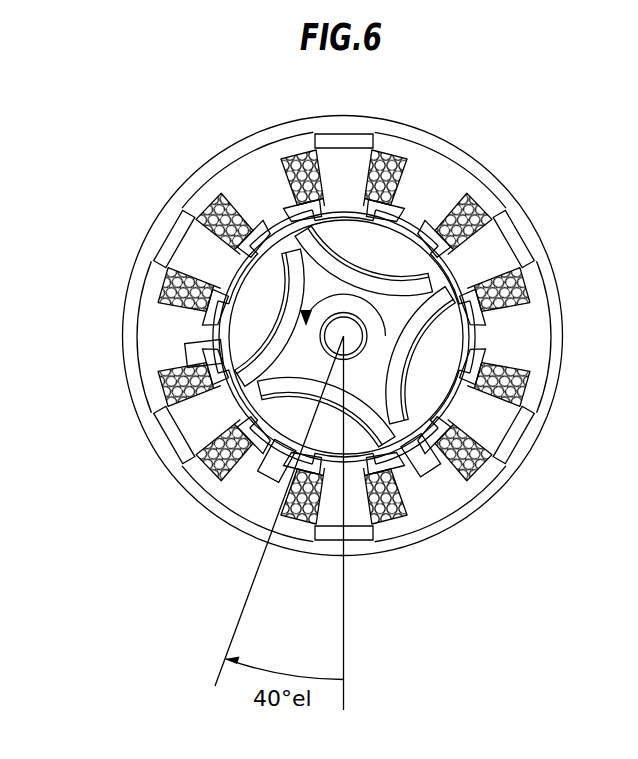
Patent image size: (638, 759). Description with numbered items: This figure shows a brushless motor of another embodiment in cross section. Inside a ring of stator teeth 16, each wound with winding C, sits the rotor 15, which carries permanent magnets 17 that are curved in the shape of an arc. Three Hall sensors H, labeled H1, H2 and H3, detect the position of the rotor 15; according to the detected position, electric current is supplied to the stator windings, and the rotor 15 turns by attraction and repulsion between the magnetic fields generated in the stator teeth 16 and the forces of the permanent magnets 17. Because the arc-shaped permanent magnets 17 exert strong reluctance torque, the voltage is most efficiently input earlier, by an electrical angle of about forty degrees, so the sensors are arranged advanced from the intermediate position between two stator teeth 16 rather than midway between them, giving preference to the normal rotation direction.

The rotor 15 is at (425, 368).
The stator teeth 16 is at (250, 477).
The permanent magnets 17 is at (440, 275).